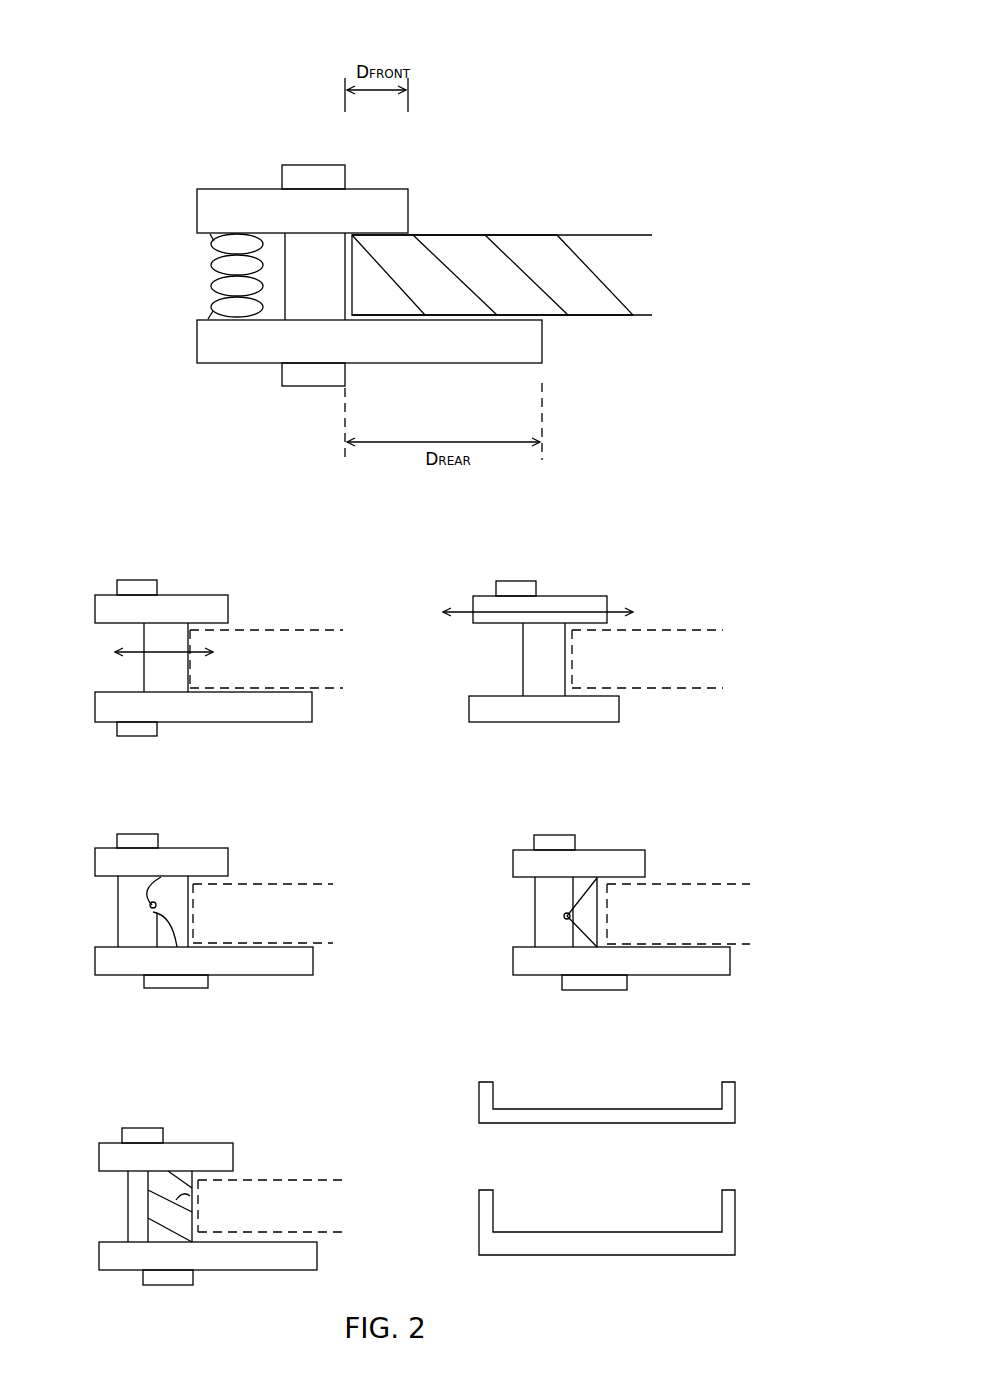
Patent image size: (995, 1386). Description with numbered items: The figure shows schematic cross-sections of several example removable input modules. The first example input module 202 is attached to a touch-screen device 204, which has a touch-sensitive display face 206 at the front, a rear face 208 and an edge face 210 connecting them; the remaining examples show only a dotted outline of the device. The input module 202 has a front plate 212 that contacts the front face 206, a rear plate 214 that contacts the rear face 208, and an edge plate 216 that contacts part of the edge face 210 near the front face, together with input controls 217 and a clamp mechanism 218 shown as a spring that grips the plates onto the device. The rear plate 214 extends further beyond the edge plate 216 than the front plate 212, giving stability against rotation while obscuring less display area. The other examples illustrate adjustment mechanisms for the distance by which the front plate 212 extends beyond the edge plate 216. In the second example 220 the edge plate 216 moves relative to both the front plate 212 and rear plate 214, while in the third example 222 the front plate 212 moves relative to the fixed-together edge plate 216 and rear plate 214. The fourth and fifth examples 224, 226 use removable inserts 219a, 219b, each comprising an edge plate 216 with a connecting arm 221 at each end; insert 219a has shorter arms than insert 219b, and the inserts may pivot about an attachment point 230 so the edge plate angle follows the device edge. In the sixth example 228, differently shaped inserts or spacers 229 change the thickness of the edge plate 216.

The removable input module 202 is at (637, 108).
The touch-screen device 204 is at (508, 275).
The touch-sensitive display face 206 is at (555, 233).
The rear face 208 is at (630, 318).
The edge face 210 is at (349, 272).
The front plate 212 is at (377, 188).
The rear plate 214 is at (457, 365).
The edge plate 216 is at (302, 300).
The input controls 217 is at (300, 163).
The clamp mechanism 218 is at (210, 268).
The removable insert 219a is at (167, 910).
The removable insert 219b is at (580, 912).
The second example input module 220 is at (232, 542).
The connecting arm 221 is at (153, 887).
The third example input module 222 is at (663, 542).
The fourth example input module 224 is at (232, 797).
The fifth example input module 226 is at (650, 797).
The sixth example input module 228 is at (235, 1090).
The inserts (spacers) 229 is at (198, 1200).
The attachment point 230 is at (143, 910).